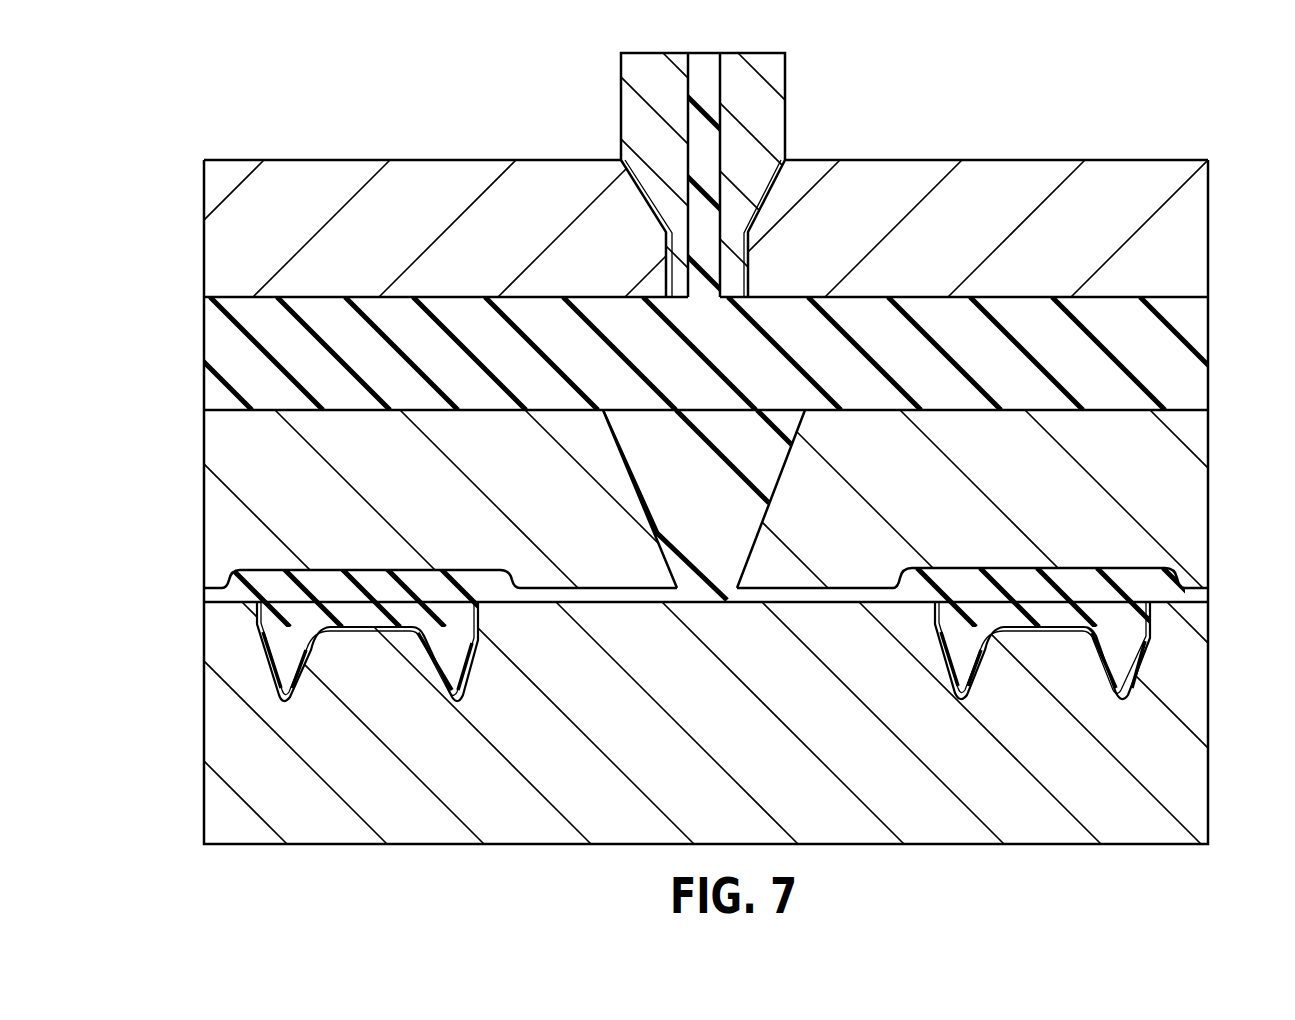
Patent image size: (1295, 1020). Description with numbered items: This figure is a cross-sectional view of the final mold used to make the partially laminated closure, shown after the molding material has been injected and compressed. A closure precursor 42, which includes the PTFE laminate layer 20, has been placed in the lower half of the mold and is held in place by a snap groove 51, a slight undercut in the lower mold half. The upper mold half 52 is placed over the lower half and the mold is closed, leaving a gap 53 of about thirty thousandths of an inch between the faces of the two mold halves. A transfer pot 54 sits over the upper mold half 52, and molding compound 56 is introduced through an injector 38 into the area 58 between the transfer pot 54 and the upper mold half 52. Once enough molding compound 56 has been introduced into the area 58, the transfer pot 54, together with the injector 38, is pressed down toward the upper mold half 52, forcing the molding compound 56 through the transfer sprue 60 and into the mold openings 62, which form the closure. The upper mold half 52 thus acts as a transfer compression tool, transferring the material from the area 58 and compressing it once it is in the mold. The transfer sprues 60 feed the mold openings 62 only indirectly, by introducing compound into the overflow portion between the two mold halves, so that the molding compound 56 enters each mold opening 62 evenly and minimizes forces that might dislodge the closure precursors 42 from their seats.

The PTFE laminate layer 20 is at (1200, 713).
The injector 38 is at (775, 72).
The closure precursor 42 is at (280, 667).
The snap groove 51 is at (262, 625).
The upper mold half 52 is at (208, 465).
The gap 53 is at (207, 597).
The transfer pot 54 is at (1192, 211).
The molding compound 56 is at (342, 313).
The area 58 is at (312, 352).
The transfer sprue 60 is at (773, 497).
The mold opening 62 is at (257, 572).